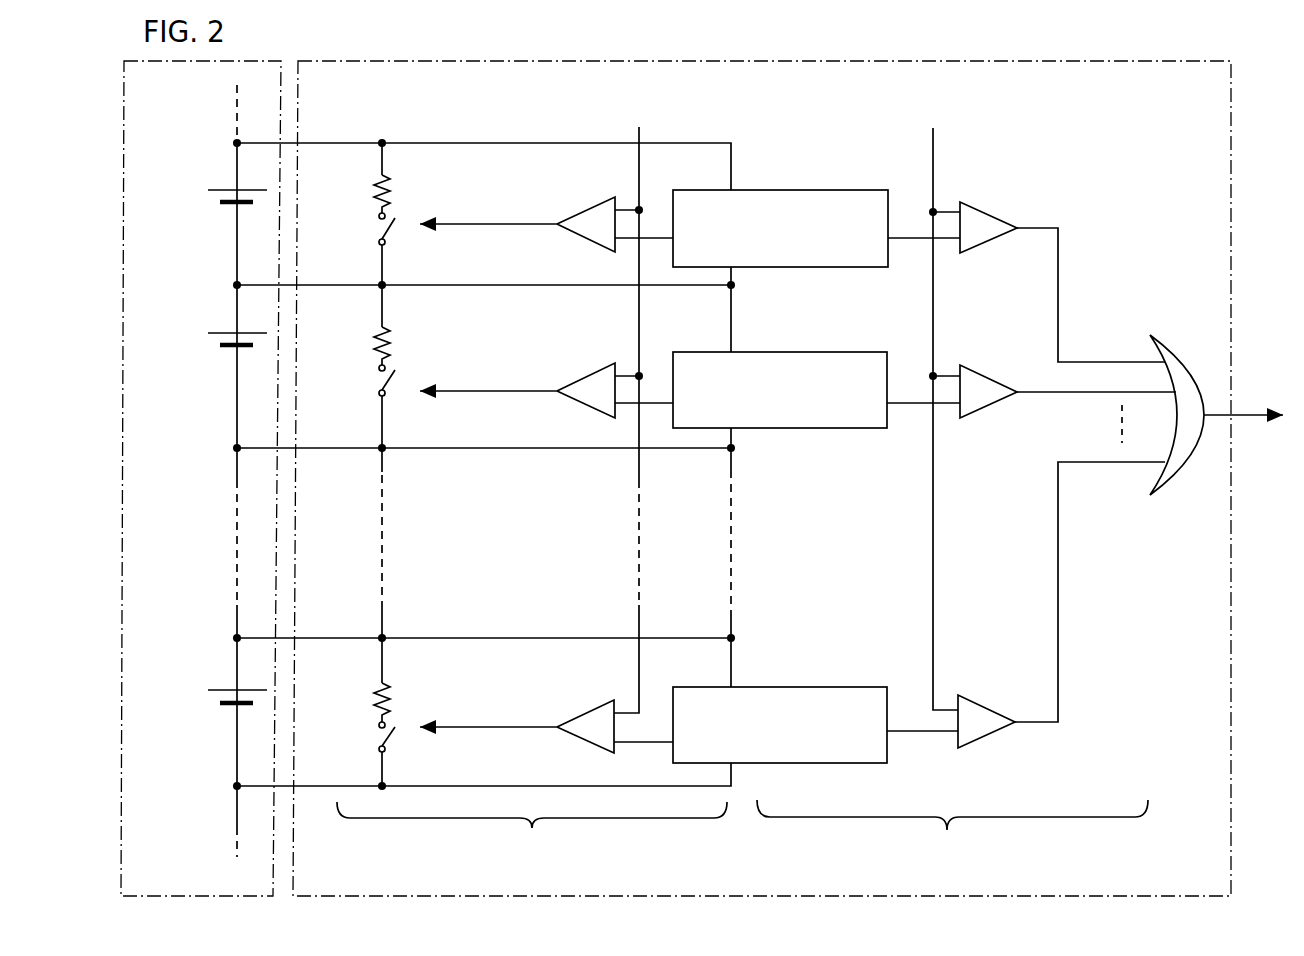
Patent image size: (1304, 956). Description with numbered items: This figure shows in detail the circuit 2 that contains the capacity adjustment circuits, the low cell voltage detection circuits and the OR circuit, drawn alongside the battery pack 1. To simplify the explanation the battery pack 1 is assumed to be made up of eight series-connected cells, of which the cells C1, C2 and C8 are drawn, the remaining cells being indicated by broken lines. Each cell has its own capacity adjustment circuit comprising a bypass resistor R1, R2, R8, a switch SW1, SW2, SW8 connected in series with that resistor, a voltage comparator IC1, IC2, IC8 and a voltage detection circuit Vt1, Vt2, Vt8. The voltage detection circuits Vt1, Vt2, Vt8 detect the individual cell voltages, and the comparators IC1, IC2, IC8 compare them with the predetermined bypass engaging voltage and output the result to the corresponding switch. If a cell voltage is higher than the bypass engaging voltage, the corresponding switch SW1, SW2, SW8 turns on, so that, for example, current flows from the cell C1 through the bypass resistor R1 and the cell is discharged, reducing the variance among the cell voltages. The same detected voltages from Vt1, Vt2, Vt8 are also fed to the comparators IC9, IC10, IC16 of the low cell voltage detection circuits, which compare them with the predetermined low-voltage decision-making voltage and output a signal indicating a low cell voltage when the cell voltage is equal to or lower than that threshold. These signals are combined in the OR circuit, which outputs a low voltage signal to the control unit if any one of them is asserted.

The battery pack 1 is at (160, 926).
The cell controller 2 is at (440, 926).
The cell C1 is at (212, 193).
The cell C2 is at (213, 345).
The cell C8 is at (210, 702).
The bypass resistor R1 is at (359, 192).
The bypass resistor R2 is at (360, 346).
The bypass resistor R8 is at (359, 701).
The switch SW1 is at (360, 229).
The switch SW2 is at (361, 382).
The switch SW8 is at (358, 737).
The voltage comparator IC1 is at (517, 215).
The voltage comparator IC2 is at (517, 385).
The voltage comparator IC8 is at (517, 719).
The voltage comparator IC9 is at (988, 210).
The voltage comparator IC10 is at (991, 376).
The voltage comparator IC16 is at (986, 707).
The voltage detection circuit Vt1 is at (786, 190).
The voltage detection circuit Vt2 is at (784, 352).
The voltage detection circuit Vt8 is at (787, 687).